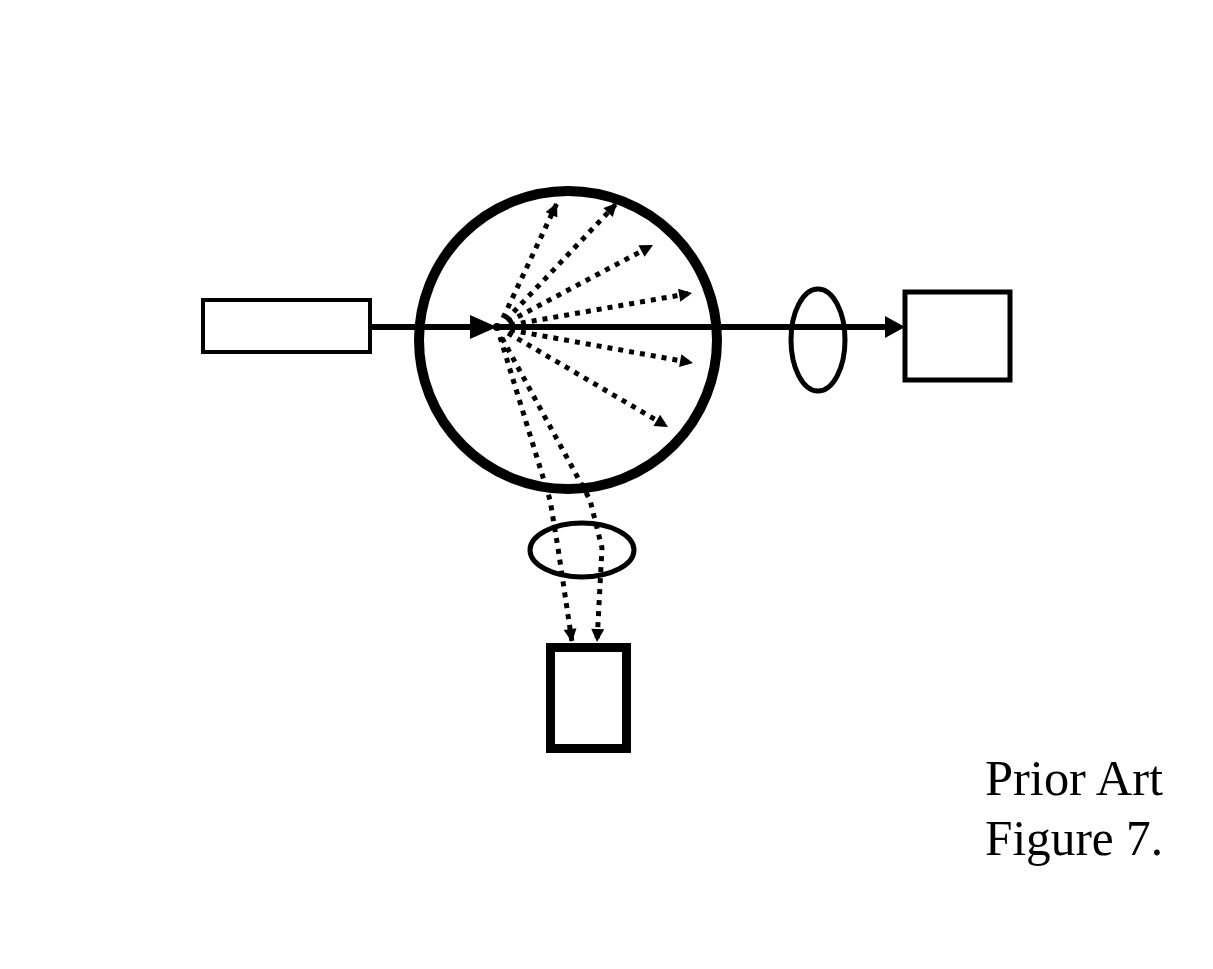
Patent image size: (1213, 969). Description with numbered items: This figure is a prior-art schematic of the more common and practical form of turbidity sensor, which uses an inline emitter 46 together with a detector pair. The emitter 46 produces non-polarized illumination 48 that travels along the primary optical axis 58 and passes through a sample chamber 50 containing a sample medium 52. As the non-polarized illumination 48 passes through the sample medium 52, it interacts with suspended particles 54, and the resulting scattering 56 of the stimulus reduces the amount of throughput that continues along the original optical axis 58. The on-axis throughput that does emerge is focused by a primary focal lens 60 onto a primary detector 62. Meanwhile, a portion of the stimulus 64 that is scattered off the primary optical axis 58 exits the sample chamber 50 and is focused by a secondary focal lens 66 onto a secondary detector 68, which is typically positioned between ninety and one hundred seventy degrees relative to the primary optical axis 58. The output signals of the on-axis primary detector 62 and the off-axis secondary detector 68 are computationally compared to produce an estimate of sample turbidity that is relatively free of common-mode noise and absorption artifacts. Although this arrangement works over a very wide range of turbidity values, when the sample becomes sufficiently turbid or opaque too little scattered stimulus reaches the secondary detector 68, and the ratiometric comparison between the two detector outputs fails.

The inline emitter 46 is at (286, 329).
The non-polarized illumination 48 is at (392, 333).
The sample chamber 50 is at (453, 243).
The sample medium 52 is at (469, 387).
The suspended particles 54 is at (497, 323).
The scattering 56 is at (572, 250).
The primary optical axis 58 is at (743, 327).
The primary focal lens 60 is at (817, 367).
The primary detector 62 is at (949, 340).
The scattered stimulus 64 is at (518, 412).
The secondary focal lens 66 is at (627, 549).
The secondary detector 68 is at (588, 698).